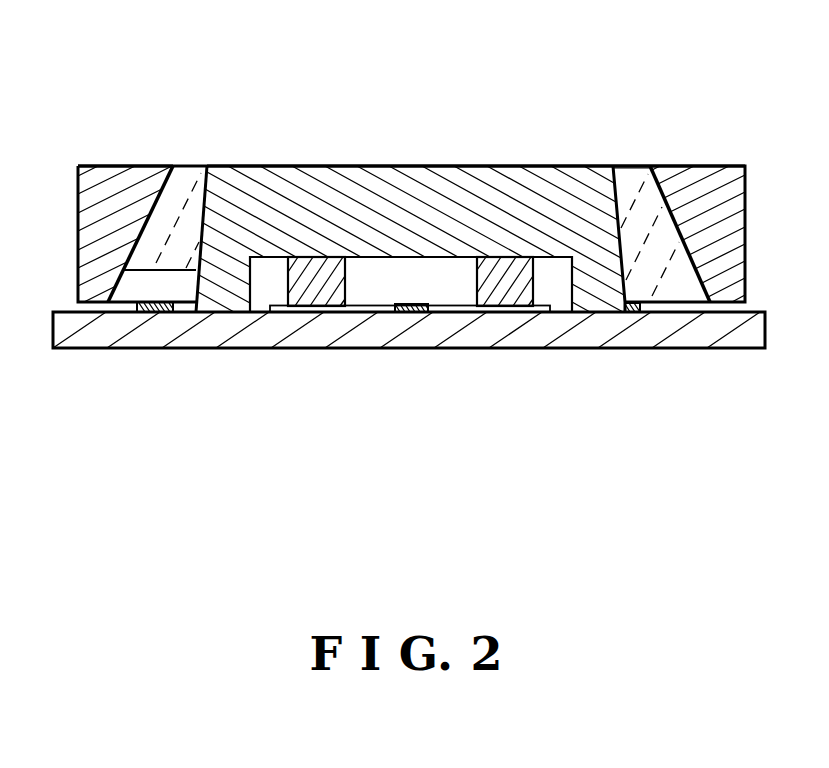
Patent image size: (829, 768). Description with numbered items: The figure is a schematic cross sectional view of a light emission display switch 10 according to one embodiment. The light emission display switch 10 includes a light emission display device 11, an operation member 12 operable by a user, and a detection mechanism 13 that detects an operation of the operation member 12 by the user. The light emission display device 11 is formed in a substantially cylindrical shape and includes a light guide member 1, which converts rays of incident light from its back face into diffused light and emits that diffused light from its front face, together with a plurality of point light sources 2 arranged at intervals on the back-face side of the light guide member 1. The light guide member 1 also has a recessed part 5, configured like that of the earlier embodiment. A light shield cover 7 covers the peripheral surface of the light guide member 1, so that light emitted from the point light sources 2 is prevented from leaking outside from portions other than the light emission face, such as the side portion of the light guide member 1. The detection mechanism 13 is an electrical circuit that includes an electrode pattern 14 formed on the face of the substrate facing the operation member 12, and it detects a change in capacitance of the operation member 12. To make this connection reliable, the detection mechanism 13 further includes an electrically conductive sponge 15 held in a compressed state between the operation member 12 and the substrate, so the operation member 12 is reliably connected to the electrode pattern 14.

The light guide member 1 is at (632, 165).
The point light sources 2 is at (157, 310).
The recessed part 5 is at (130, 278).
The light shield cover 7 is at (703, 165).
The light emission display switch 10 is at (407, 164).
The light emission display device 11 is at (648, 164).
The operation member 12 is at (468, 165).
The detection mechanism 13 is at (282, 314).
The electrode pattern 14 is at (303, 310).
The electrically conductive sponge 15 is at (345, 278).